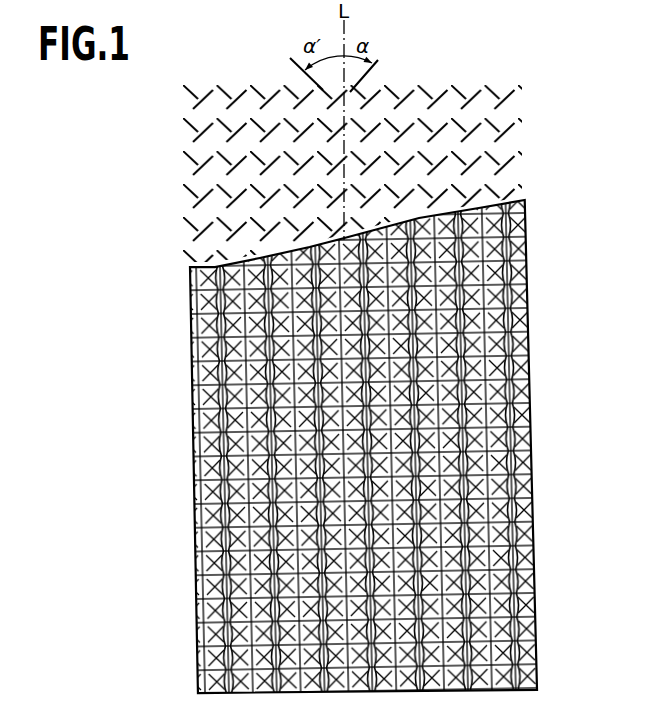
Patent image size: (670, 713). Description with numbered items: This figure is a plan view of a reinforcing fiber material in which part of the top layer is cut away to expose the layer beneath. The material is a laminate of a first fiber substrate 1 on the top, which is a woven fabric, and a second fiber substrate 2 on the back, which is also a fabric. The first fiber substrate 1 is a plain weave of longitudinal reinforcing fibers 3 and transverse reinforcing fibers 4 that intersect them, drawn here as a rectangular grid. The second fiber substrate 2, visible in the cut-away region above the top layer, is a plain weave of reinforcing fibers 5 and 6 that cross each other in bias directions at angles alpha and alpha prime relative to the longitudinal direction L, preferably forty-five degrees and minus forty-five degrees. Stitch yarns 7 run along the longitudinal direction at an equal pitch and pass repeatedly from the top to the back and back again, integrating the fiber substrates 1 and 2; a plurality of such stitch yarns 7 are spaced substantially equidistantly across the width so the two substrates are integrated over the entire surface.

The first fiber substrate 1 is at (185, 466).
The second fiber substrate 2 is at (178, 182).
The longitudinal reinforcing fibers 3 is at (252, 578).
The transverse reinforcing fibers 4 is at (193, 537).
The reinforcing fibers 5 is at (394, 101).
The reinforcing fibers 6 is at (281, 116).
The stitch yarns 7 is at (533, 577).